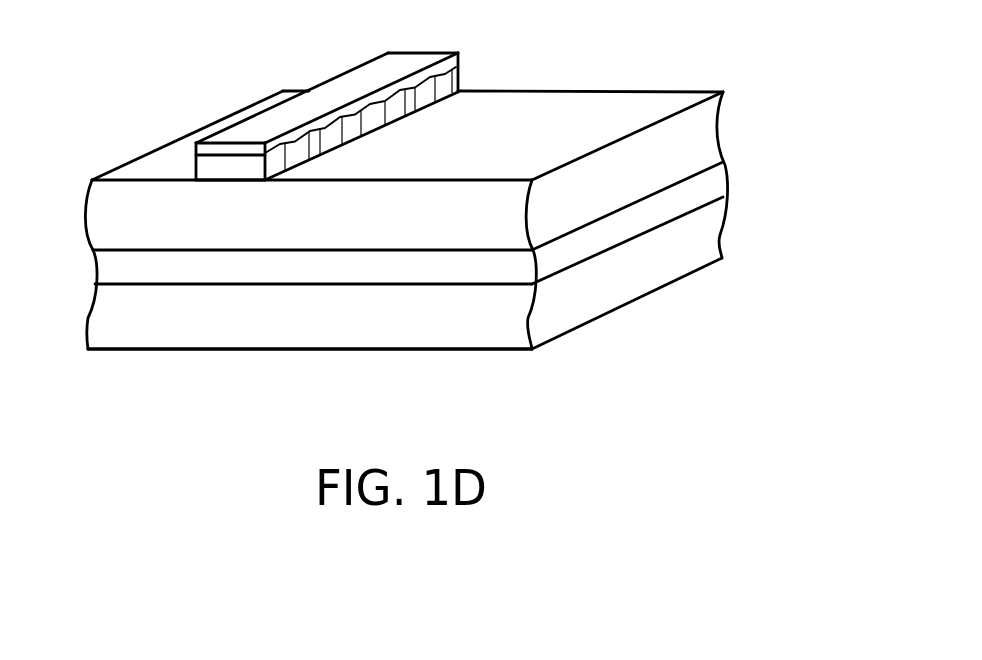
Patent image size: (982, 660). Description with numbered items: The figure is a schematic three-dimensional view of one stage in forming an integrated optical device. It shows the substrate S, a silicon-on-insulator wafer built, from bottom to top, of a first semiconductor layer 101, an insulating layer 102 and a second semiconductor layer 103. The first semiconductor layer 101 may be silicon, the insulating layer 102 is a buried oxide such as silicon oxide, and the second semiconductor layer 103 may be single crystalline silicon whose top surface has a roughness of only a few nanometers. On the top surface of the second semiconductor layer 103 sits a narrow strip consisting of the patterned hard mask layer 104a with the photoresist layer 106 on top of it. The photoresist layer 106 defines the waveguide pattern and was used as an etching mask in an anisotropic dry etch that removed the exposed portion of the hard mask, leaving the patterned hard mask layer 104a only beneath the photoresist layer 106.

The first semiconductor layer 101 is at (444, 273).
The insulating layer 102 is at (705, 189).
The second semiconductor layer 103 is at (705, 140).
The patterned hard mask layer 104a is at (448, 82).
The photoresist layer 106 is at (361, 90).
The substrate S is at (461, 220).